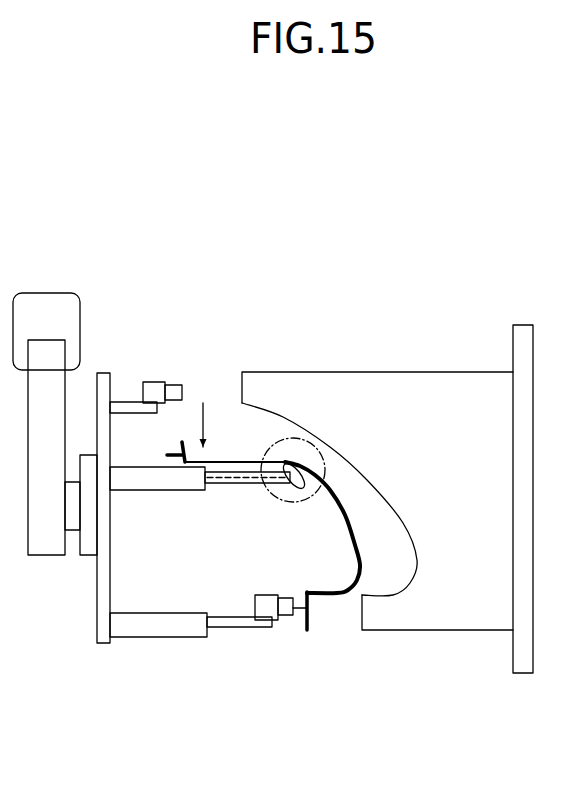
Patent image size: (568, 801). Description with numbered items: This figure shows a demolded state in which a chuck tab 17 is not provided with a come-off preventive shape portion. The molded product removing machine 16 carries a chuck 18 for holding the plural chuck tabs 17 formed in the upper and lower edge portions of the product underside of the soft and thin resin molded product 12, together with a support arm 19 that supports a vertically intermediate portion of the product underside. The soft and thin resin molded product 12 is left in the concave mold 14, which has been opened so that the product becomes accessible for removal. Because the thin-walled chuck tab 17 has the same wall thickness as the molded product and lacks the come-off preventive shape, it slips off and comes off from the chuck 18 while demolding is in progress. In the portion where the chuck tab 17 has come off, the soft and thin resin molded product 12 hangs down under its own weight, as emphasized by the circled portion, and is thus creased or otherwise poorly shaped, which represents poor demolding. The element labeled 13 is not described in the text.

The soft and thin resin molded product 12 is at (353, 536).
The guide body 13 is at (398, 522).
The concave mold 14 is at (412, 631).
The molded product removing machine 16 is at (86, 318).
The chuck tab 17 is at (180, 445).
The chuck 18 is at (162, 366).
The support arm 19 is at (233, 484).